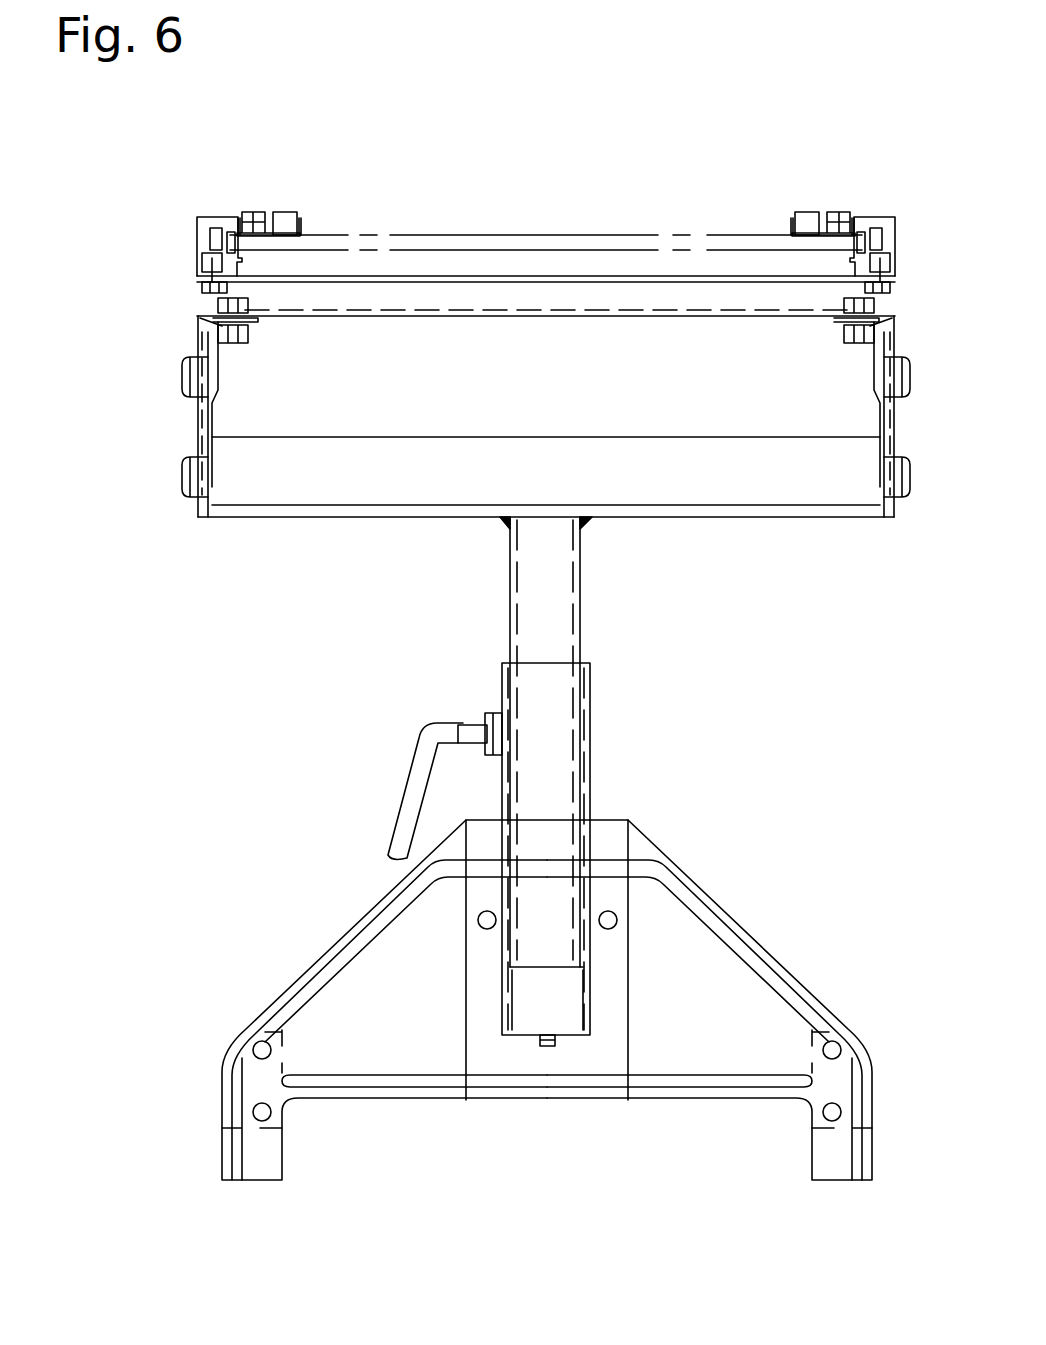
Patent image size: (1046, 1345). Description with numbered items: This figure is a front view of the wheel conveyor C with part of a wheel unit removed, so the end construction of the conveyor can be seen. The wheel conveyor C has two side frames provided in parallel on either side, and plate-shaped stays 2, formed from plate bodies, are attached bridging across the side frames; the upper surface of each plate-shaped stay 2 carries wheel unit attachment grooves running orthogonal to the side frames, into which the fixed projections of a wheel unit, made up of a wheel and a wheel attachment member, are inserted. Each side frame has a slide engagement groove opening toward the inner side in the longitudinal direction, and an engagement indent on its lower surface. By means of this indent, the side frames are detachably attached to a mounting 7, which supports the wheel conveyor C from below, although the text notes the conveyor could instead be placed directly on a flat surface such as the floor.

The wheel conveyor C is at (510, 173).
The plate-shaped stay 2 is at (570, 243).
The mounting 7 is at (552, 758).